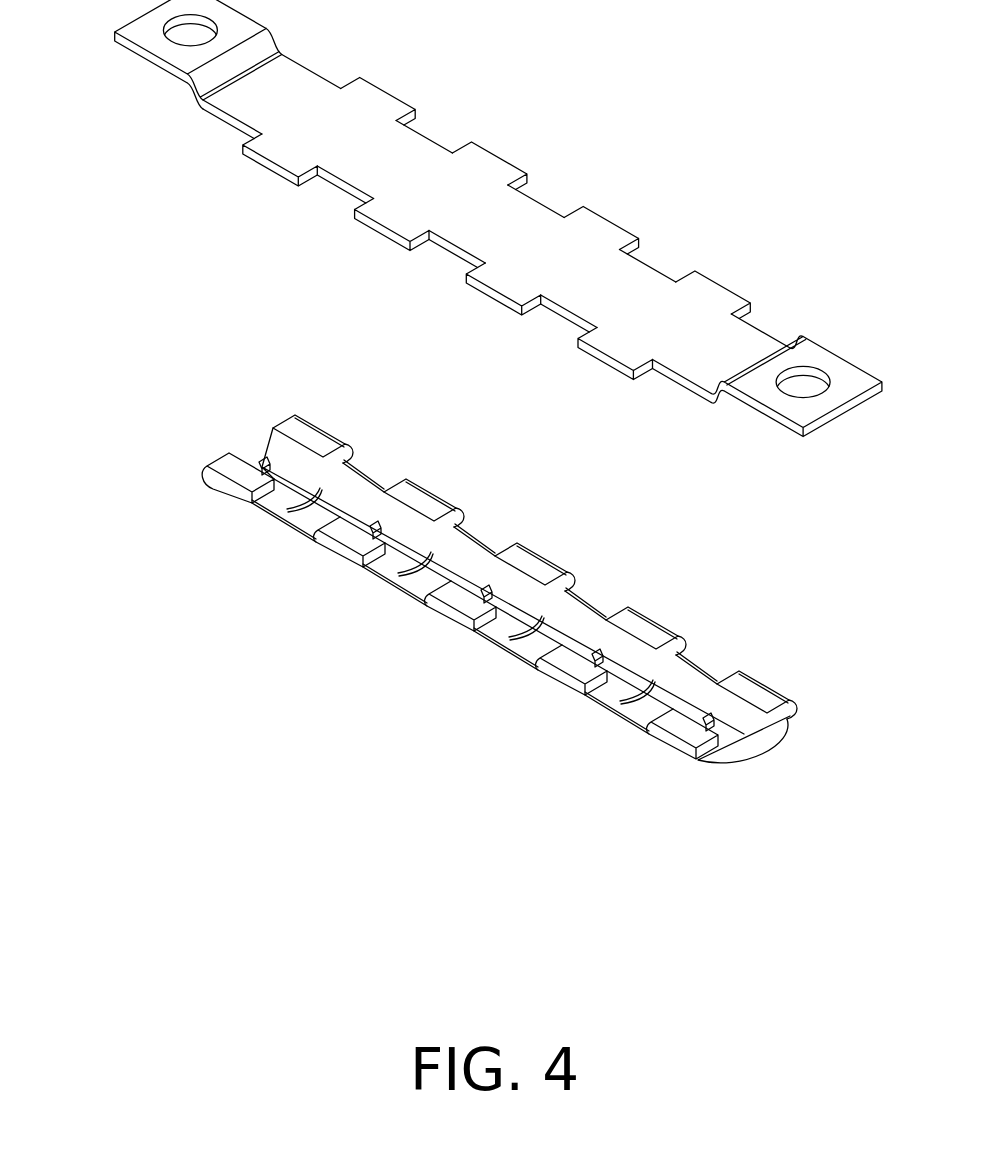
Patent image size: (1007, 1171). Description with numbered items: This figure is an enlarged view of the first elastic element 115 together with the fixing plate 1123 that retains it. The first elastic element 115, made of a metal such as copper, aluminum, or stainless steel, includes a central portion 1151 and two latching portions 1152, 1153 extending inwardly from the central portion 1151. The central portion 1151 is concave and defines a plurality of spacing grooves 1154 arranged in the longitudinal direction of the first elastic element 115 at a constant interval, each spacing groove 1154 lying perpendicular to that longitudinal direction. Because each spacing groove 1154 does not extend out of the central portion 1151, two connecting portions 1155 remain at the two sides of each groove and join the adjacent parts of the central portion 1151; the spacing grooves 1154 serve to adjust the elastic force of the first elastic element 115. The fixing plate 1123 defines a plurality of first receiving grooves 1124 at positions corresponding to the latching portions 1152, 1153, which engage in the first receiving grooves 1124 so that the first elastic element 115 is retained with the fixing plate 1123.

The fixing plate 1123 is at (685, 325).
The first receiving grooves 1124 is at (652, 265).
The first elastic element 115 is at (478, 665).
The central portion 1151 is at (740, 753).
The latching portion 1152 is at (752, 692).
The latching portion 1153 is at (683, 727).
The spacing grooves 1154 is at (642, 687).
The connecting portions 1155 is at (693, 692).